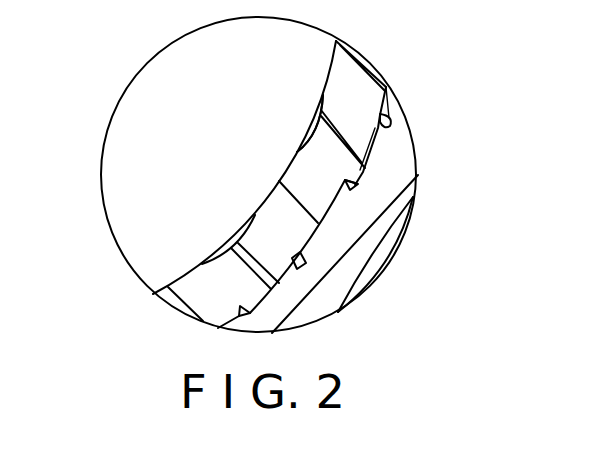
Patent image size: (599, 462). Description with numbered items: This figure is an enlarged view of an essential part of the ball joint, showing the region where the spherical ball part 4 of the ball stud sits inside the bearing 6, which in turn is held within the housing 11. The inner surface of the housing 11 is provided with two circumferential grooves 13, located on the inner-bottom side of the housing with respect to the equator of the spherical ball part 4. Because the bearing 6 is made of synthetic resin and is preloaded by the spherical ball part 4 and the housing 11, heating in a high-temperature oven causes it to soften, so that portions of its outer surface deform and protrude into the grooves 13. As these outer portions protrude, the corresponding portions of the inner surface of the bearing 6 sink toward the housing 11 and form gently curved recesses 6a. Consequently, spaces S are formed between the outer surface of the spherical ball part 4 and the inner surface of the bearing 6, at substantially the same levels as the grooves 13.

The spherical ball part 4 is at (150, 84).
The bearing 6 is at (326, 210).
The gently curved recesses 6a is at (312, 112).
The circumferential grooves 13 is at (390, 112).
The housing 11 is at (417, 168).
The spaces S is at (311, 130).